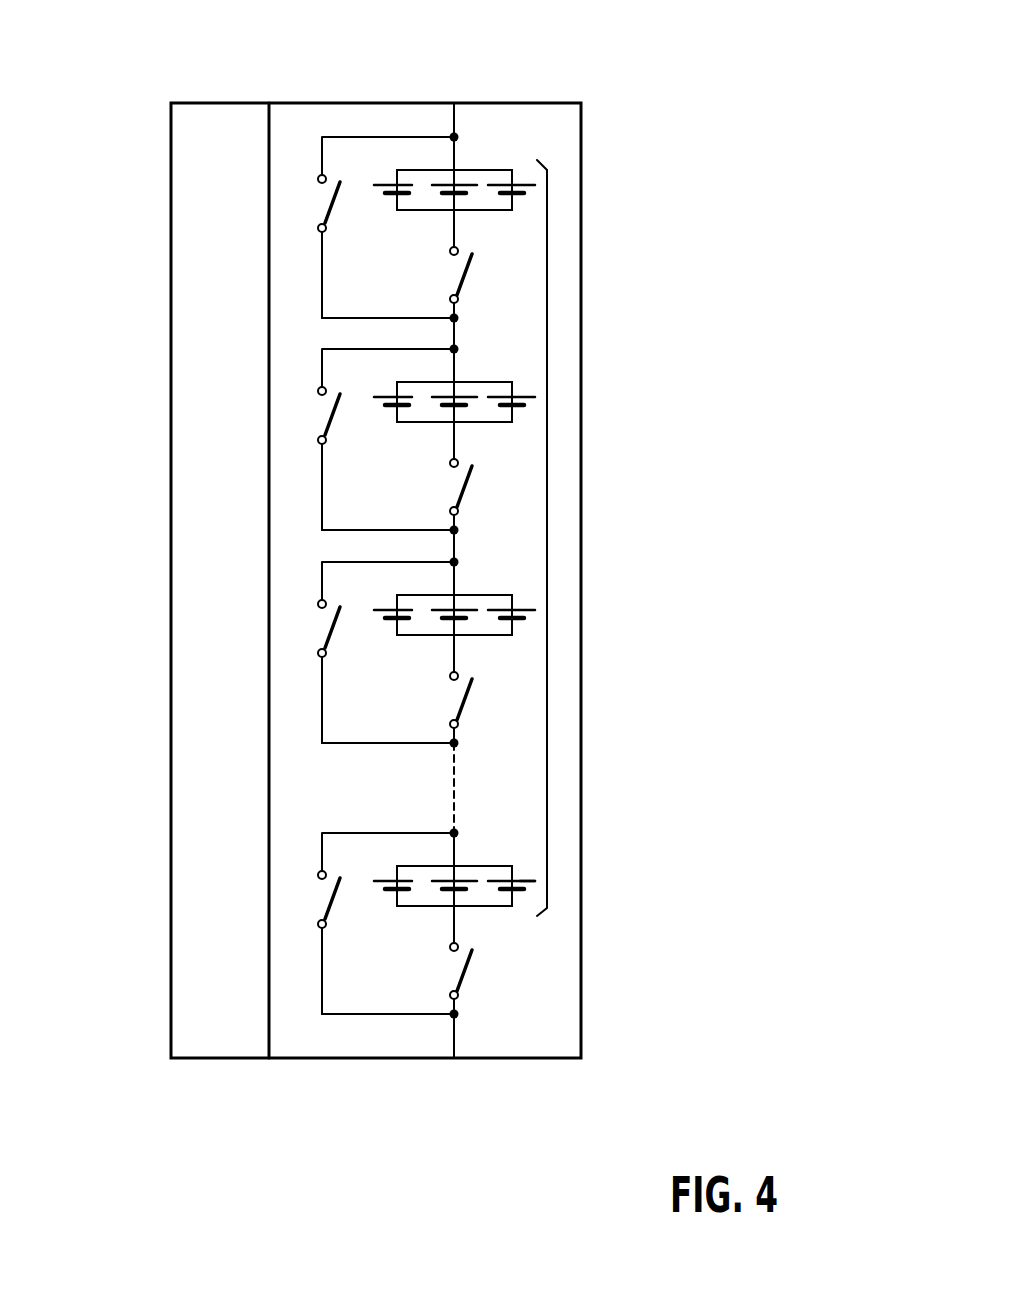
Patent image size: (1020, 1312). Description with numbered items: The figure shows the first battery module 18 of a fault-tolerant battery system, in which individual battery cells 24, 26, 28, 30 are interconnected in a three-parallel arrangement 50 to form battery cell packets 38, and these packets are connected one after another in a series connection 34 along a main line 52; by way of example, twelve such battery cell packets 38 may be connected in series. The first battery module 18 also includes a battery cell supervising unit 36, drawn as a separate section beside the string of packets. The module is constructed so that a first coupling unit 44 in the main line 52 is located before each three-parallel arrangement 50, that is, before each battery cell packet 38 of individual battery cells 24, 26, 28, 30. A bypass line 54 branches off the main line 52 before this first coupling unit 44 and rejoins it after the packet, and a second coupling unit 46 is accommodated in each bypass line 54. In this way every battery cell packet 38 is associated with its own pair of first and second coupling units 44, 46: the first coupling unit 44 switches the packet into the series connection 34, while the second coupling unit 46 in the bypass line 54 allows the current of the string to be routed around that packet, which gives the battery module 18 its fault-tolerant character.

The first battery module 18 is at (549, 118).
The battery cell 24 is at (383, 182).
The battery cell 26 is at (442, 182).
The battery cell 28 is at (502, 182).
The battery cell 30 is at (530, 884).
The series connection 34 is at (547, 660).
The battery cell supervising unit 36 is at (190, 512).
The battery cell packet 38 is at (515, 621).
The first coupling unit 44 is at (462, 492).
The second coupling unit 46 is at (332, 413).
The 3p arrangement 50 is at (500, 930).
The main line 52 is at (502, 435).
The bypass line 54 is at (322, 285).